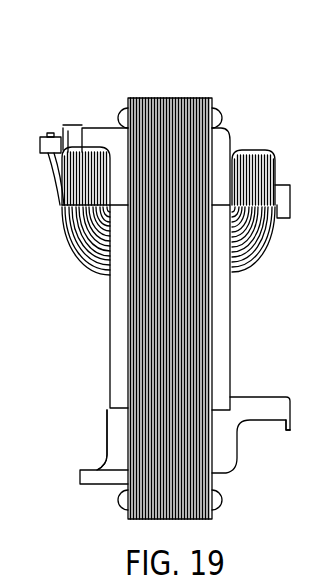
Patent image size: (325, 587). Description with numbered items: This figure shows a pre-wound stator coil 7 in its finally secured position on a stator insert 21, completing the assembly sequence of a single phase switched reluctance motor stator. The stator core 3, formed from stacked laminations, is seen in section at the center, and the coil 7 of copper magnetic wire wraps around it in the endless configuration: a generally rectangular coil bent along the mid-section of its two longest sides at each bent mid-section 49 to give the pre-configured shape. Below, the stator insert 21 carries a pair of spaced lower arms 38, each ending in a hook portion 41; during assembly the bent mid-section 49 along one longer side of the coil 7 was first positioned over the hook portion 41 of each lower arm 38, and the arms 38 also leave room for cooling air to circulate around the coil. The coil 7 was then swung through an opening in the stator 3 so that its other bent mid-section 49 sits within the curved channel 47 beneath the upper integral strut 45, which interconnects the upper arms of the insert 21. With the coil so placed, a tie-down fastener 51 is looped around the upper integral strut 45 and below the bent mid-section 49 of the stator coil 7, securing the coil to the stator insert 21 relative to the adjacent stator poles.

The stator core 3 is at (167, 92).
The stator coil 7 is at (257, 263).
The stator insert 21 is at (230, 148).
The spaced lower arms 38 is at (262, 402).
The hook portion 41 is at (283, 185).
The upper integral strut 45 is at (100, 127).
The curved channel 47 is at (100, 465).
The bent mid-section 49 is at (75, 180).
The tie-down fastener 51 is at (48, 135).